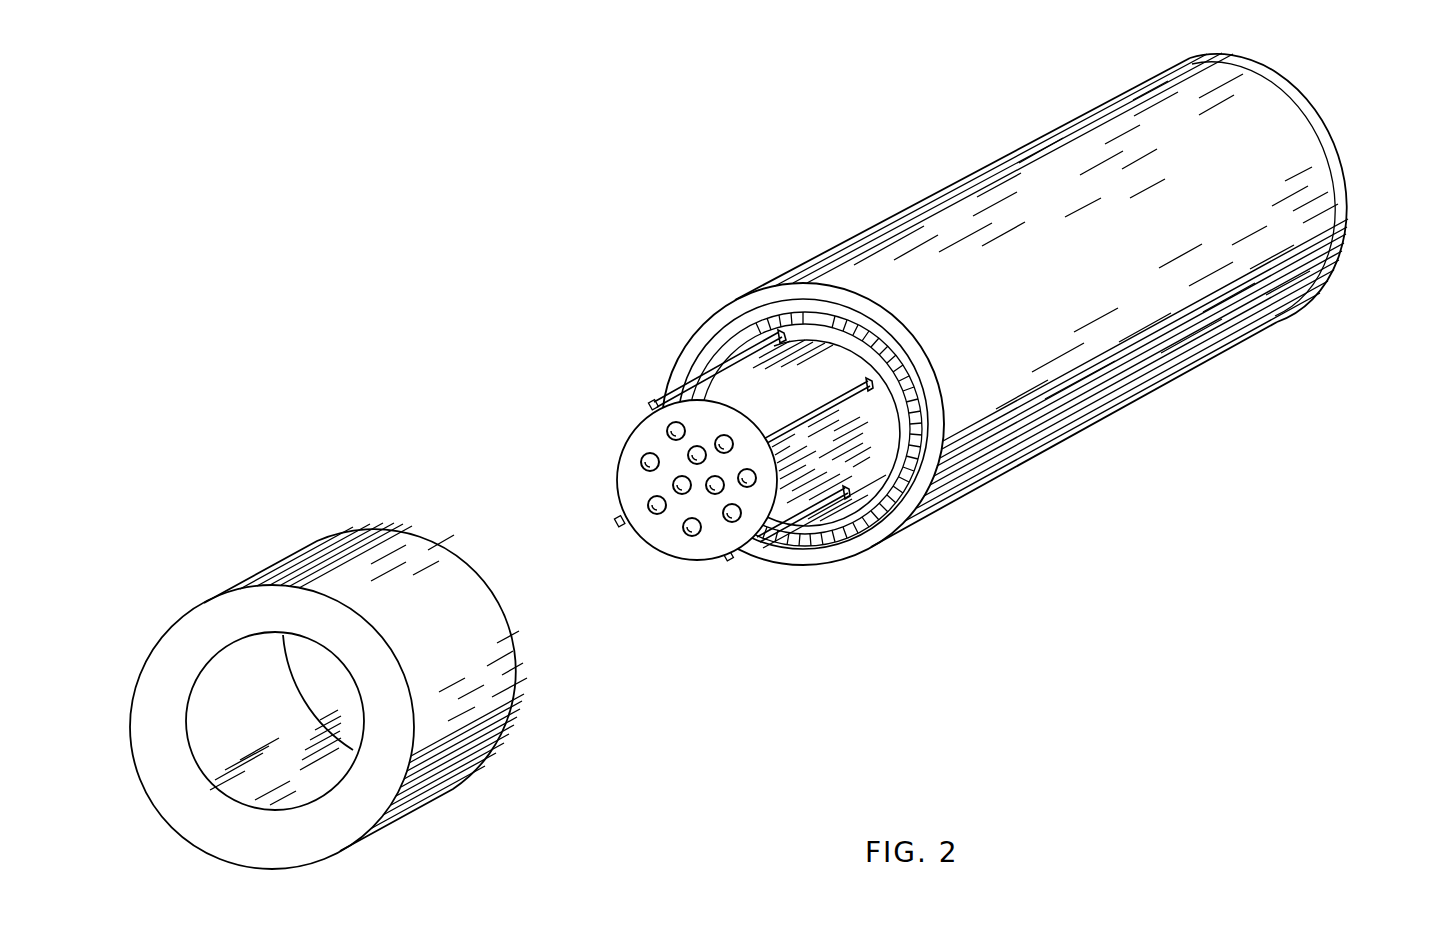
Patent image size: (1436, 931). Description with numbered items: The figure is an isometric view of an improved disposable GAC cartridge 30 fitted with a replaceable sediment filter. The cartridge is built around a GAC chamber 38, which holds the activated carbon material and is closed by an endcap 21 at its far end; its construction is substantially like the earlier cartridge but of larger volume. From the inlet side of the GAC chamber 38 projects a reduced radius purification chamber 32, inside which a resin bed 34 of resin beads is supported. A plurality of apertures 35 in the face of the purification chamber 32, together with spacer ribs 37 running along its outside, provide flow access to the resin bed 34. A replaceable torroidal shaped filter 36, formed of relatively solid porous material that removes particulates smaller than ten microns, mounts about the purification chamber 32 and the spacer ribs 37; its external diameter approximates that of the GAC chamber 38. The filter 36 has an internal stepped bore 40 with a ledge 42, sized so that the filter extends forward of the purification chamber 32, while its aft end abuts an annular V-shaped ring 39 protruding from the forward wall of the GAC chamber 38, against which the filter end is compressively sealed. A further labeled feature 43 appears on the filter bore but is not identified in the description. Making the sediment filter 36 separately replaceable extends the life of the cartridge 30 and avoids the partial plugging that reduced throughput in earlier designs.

The endcap 21 is at (1348, 208).
The disposable GAC cartridge 30 is at (891, 212).
The purification chamber 32 is at (627, 442).
The resin bed 34 is at (670, 426).
The apertures 35 is at (647, 501).
The replaceable torroidal shaped filter 36 is at (277, 562).
The spacer ribs 37 is at (830, 405).
The GAC chamber 38 is at (1097, 423).
The annular V-shaped ring 39 is at (715, 335).
The stepped bore 40 is at (203, 740).
The ledge 42 is at (220, 682).
The bore wall 43 is at (280, 810).